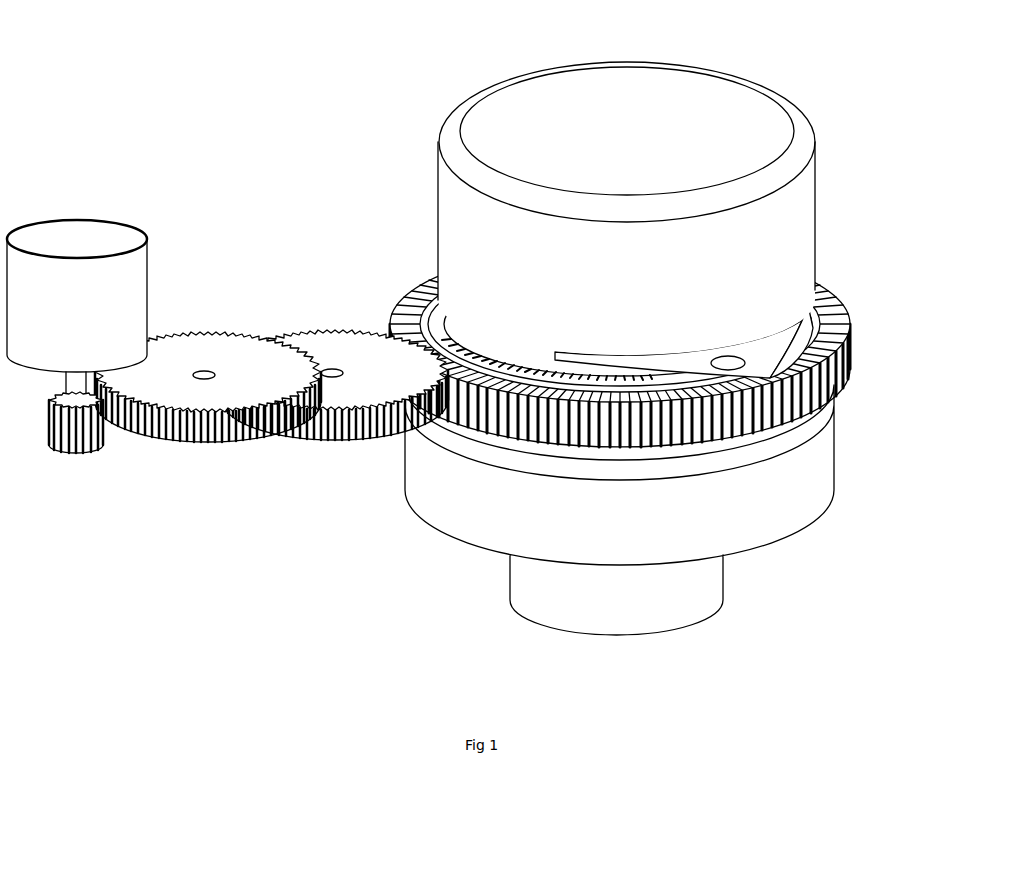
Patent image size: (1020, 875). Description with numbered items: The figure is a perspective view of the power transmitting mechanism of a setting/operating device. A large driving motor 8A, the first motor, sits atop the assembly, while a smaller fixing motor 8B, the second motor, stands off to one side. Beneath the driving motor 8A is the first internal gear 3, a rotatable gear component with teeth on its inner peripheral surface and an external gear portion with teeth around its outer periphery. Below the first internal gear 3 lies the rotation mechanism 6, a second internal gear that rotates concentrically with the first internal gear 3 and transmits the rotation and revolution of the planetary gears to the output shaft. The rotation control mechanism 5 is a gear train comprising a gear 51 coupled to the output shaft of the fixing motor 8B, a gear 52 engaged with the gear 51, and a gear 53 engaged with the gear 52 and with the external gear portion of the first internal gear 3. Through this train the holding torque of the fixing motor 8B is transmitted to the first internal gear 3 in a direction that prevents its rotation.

The first internal gear 3 is at (848, 372).
The rotation control mechanism 5 is at (227, 372).
The rotation mechanism 6 is at (815, 478).
The driving motor 8A is at (628, 82).
The fixing motor 8B is at (68, 238).
The gear 51 is at (76, 452).
The gear 52 is at (205, 440).
The gear 53 is at (344, 440).